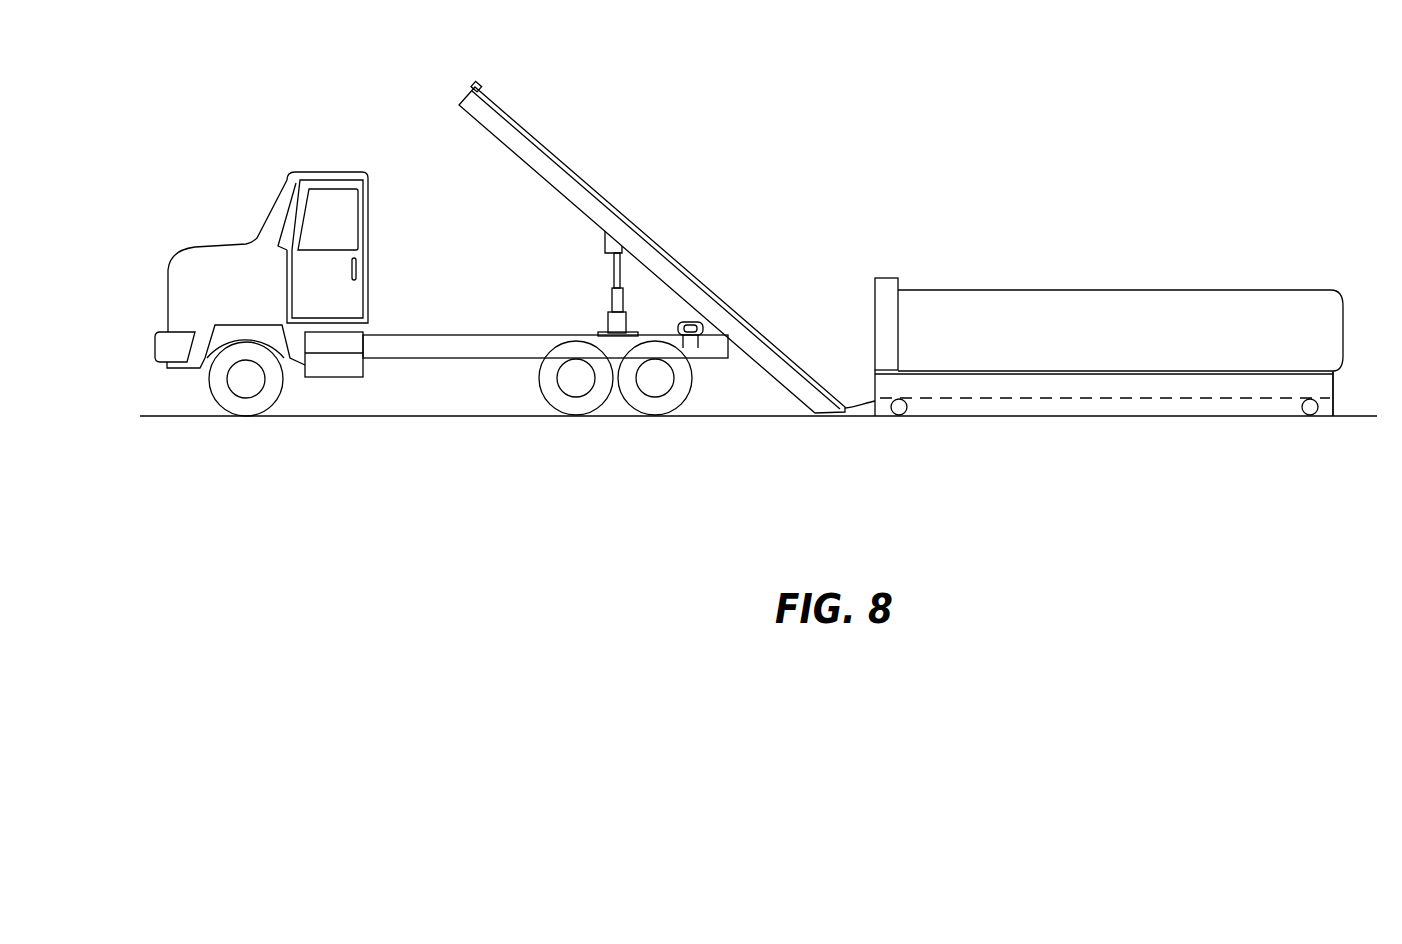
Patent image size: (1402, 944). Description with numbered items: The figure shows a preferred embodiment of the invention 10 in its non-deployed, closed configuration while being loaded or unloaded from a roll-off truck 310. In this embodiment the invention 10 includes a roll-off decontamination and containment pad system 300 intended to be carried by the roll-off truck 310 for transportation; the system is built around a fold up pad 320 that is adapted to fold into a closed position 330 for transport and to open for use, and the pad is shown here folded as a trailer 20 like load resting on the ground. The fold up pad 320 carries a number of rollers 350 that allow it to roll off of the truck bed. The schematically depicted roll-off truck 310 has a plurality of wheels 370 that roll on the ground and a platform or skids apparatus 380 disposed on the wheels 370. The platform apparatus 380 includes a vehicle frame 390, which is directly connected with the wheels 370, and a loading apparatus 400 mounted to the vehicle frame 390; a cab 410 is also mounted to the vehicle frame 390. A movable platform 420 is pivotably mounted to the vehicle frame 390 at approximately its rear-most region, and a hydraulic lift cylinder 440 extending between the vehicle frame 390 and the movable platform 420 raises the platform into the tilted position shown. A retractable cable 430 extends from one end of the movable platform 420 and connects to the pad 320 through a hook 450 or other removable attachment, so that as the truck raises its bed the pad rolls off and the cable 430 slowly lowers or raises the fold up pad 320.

The invention 10 is at (1057, 139).
The trailer 20 is at (948, 302).
The roll-off decontamination and containment pad system 300 is at (1162, 388).
The roll-off truck 310 is at (289, 164).
The fold up pad 320 is at (1338, 405).
The closed position 330 is at (1208, 297).
The rollers 350 is at (910, 408).
The wheels 370 is at (283, 385).
The platform apparatus 380 is at (466, 82).
The vehicle frame 390 is at (452, 342).
The loading apparatus 400 is at (540, 143).
The cab 410 is at (338, 178).
The movable platform 420 is at (607, 213).
The retractable cable 430 is at (758, 320).
The hydraulic lift cylinder 440 is at (603, 293).
The hook 450 is at (873, 403).